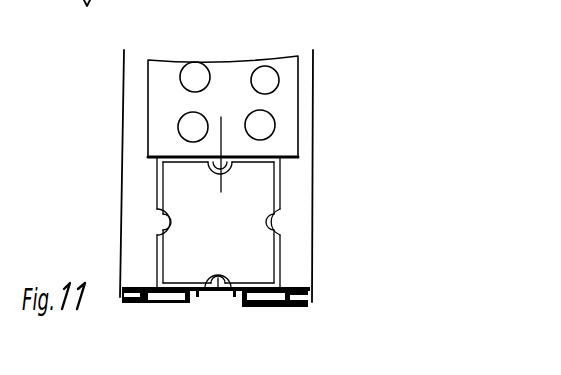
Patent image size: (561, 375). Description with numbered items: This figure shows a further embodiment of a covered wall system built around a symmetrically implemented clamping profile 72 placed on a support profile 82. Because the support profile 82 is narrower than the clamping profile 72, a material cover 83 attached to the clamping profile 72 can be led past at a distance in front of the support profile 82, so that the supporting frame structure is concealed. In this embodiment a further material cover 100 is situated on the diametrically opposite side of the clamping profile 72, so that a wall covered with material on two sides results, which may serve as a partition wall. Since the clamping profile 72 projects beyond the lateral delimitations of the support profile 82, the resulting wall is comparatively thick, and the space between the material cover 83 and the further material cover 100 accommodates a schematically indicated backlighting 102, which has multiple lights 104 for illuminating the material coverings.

The further material cover 100 is at (122, 102).
The backlighting 102 is at (240, 56).
The lights 104 is at (193, 130).
The support profile 82 is at (157, 188).
The material cover 83 is at (312, 258).
The clamping profile 72 is at (164, 311).